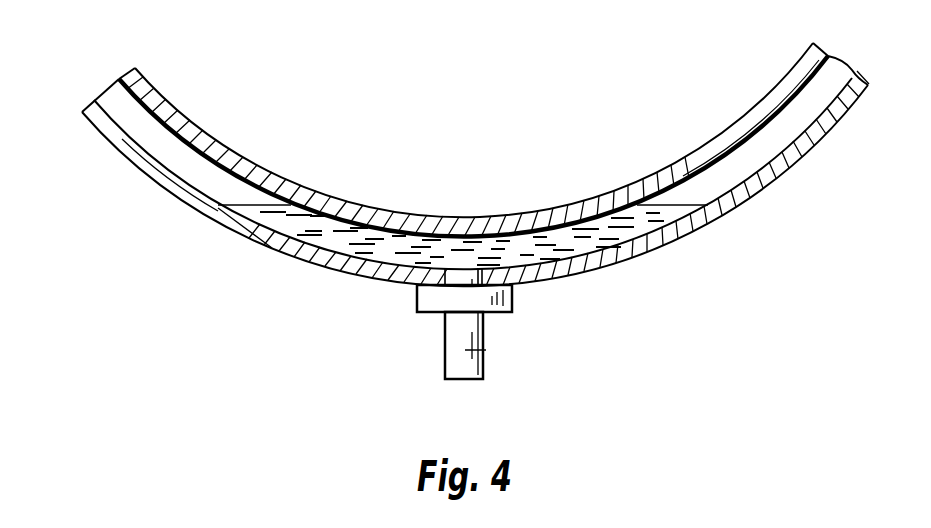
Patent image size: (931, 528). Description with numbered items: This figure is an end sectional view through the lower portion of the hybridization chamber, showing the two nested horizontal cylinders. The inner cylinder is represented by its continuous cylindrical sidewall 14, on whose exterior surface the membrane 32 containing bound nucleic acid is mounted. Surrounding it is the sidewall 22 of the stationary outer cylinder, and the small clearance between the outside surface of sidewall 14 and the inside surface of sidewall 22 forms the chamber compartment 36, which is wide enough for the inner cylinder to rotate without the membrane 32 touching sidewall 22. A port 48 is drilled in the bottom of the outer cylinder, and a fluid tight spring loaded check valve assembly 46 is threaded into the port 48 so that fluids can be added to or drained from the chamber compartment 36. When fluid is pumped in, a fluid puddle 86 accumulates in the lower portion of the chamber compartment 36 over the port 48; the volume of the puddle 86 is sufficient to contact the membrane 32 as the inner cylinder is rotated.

The cylindrical sidewall 14 is at (200, 128).
The cylindrical sidewall 22 is at (130, 162).
The membrane 32 is at (126, 101).
The chamber compartment 36 is at (218, 186).
The check valve assembly 46 is at (486, 350).
The port 48 is at (416, 287).
The fluid puddle 86 is at (682, 202).